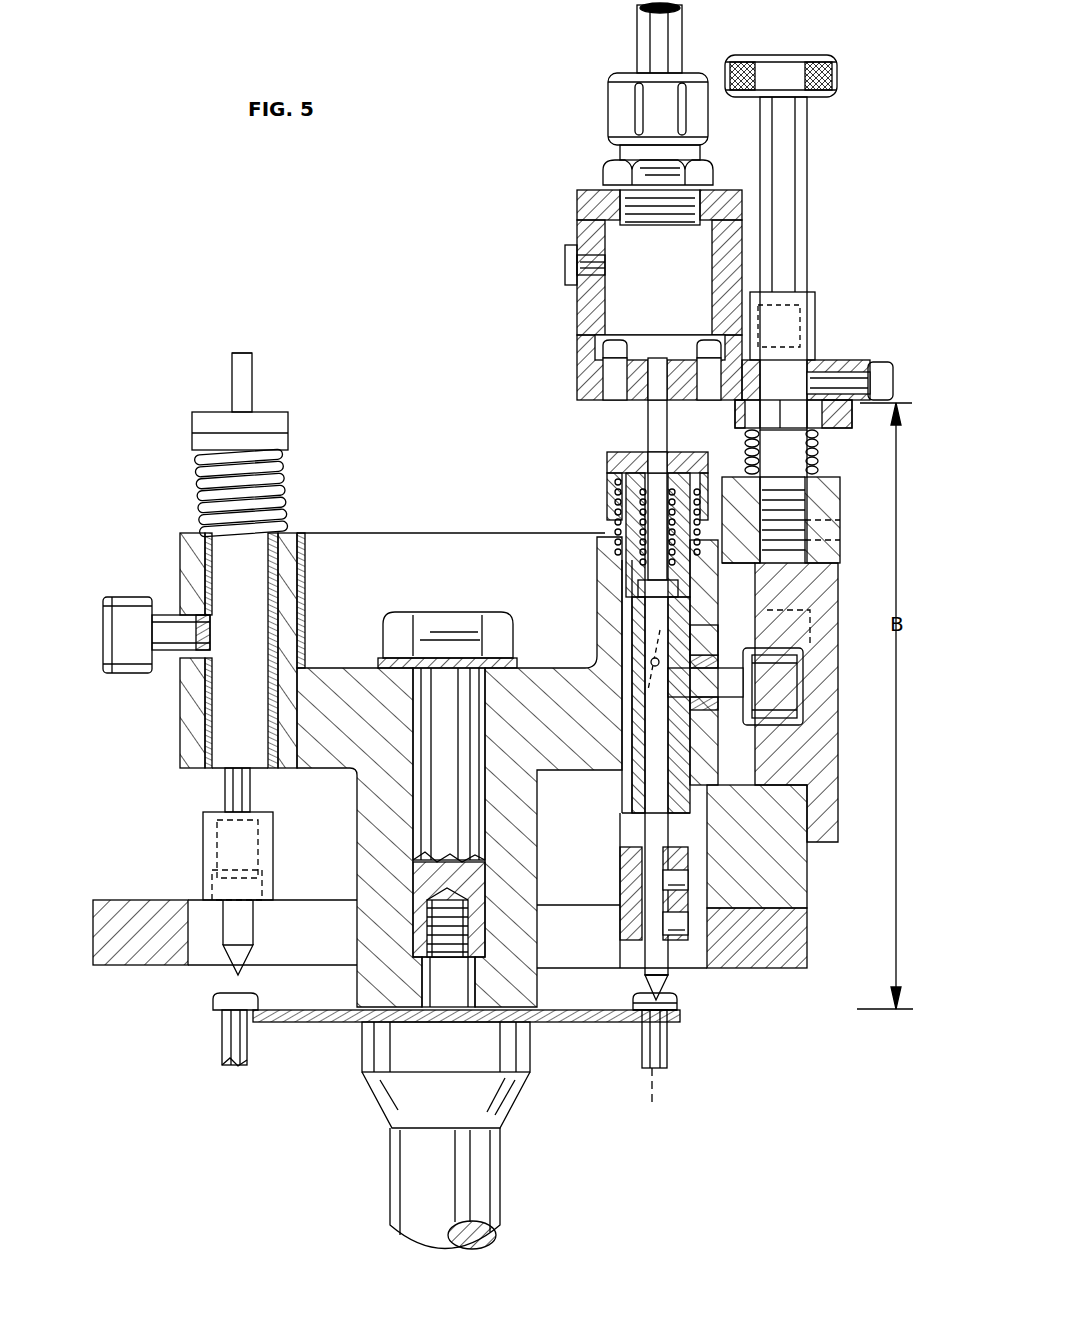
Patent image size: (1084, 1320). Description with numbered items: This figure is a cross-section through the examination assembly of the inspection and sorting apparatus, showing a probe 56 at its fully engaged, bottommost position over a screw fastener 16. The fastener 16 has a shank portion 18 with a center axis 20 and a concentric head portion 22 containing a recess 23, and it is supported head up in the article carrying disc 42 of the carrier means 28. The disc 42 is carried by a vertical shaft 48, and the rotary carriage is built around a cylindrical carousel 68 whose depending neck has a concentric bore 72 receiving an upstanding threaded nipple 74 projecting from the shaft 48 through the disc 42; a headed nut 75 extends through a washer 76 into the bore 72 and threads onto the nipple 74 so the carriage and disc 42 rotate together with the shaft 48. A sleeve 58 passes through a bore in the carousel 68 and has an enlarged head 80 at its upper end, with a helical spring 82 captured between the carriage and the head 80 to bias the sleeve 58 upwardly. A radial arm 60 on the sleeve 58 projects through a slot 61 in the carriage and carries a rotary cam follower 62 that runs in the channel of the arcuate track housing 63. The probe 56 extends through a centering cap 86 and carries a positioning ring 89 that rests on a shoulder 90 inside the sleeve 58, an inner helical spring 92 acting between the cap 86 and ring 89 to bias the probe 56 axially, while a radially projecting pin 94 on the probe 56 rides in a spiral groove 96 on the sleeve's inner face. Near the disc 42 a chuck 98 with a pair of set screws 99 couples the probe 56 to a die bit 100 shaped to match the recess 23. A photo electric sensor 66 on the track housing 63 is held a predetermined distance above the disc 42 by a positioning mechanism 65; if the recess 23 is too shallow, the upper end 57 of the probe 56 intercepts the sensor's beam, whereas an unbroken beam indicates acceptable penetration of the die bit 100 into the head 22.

The screw fastener 16 is at (222, 1046).
The shank portion 18 is at (672, 1048).
The center axis 20 is at (655, 1081).
The head portion 22 is at (675, 1003).
The recess 23 is at (675, 1012).
The carrier means 28 is at (343, 1041).
The article carrying disc 42 is at (328, 1022).
The vertical shaft 48 is at (485, 1170).
The probe 56 is at (252, 380).
The upper end 57 is at (245, 352).
The sleeve 58 is at (622, 753).
The radial arm 60 is at (165, 648).
The slot 61 is at (750, 741).
The rotary cam follower 62 is at (122, 660).
The arcuate track housing 63 is at (830, 733).
The positioning mechanism 65 is at (793, 181).
The photo electric sensor 66 is at (628, 383).
The cylindrical carousel 68 is at (297, 598).
The concentric bore 72 is at (443, 784).
The threaded nipple 74 is at (360, 883).
The headed nut 75 is at (460, 612).
The washer 76 is at (520, 663).
The enlarged head 80 is at (635, 486).
The helical spring 82 is at (280, 463).
The centering cap 86 is at (697, 456).
The positioning ring 89 is at (670, 596).
The shoulder 90 is at (640, 606).
The inner helical spring 92 is at (647, 566).
The radially projecting pin 94 is at (800, 790).
The spiral groove 96 is at (650, 646).
The chuck 98 is at (205, 848).
The set screw 99 is at (688, 915).
The die bit 100 is at (233, 938).